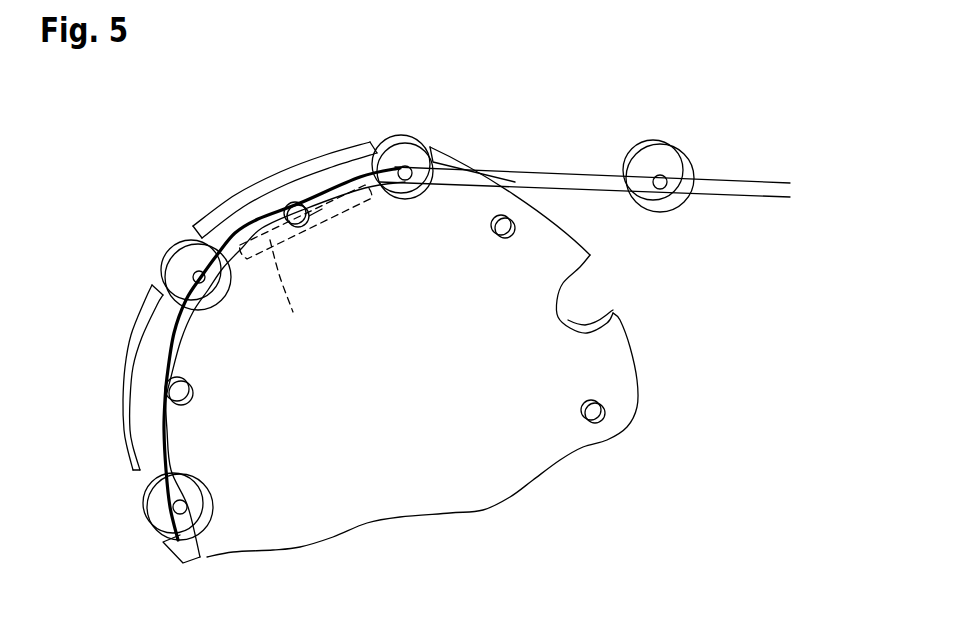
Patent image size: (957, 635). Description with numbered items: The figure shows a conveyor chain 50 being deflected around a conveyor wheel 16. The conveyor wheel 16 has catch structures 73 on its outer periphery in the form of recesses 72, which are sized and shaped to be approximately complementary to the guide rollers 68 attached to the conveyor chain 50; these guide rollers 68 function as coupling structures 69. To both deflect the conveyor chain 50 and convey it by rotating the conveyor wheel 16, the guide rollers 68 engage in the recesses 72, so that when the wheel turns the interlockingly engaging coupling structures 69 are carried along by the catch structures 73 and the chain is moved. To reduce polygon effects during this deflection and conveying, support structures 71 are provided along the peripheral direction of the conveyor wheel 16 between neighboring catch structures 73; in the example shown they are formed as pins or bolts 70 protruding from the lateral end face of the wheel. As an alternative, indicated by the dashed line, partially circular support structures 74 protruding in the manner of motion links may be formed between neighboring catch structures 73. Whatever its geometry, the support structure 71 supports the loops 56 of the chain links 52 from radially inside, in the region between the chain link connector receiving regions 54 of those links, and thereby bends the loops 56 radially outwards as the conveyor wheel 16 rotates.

The conveyor wheel 16 is at (508, 472).
The conveyor chain 50 is at (520, 153).
The chain link 52 is at (333, 180).
The chain link connector receiving region 54 is at (220, 264).
The loop 56 is at (212, 240).
The guide roller 68 is at (665, 160).
The coupling structure 69 is at (429, 141).
The pin or bolt 70 is at (298, 211).
The support structure 71 is at (318, 221).
The recess 72 is at (573, 295).
The catch structure 73 is at (618, 306).
The partially circular support structure 74 is at (306, 263).